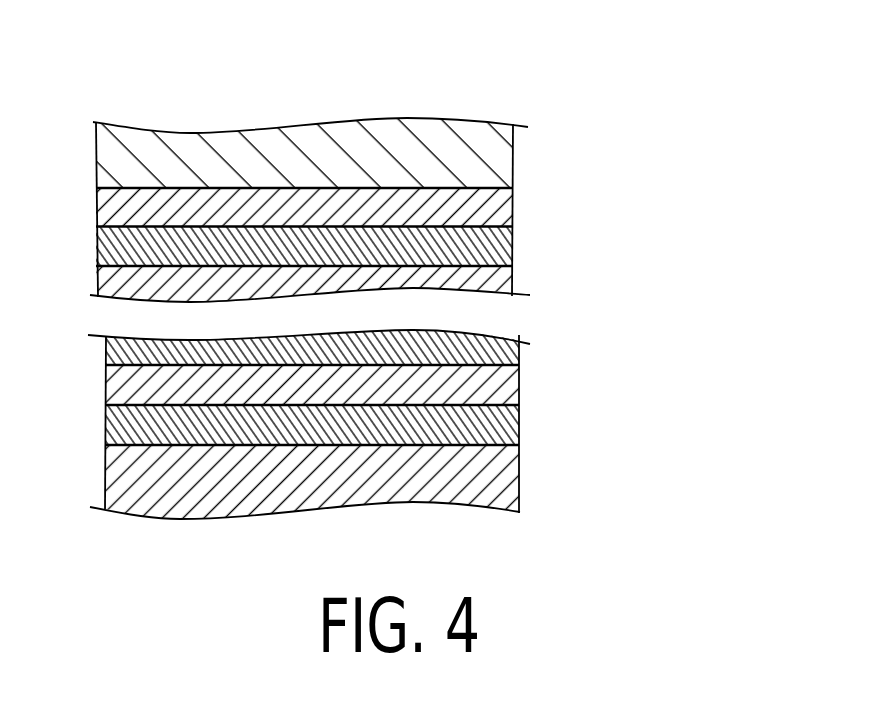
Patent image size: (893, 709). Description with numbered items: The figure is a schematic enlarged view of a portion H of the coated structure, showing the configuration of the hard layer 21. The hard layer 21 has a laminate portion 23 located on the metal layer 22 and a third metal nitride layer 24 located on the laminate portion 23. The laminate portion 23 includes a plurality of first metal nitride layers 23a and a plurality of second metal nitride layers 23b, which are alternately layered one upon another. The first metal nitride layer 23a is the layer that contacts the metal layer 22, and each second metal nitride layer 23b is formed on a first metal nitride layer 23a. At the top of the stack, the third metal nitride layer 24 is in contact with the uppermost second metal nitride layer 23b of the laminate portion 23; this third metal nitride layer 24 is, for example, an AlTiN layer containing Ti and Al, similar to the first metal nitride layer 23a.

The portion H is at (86, 78).
The hard layer 21 is at (692, 132).
The metal layer 22 is at (505, 475).
The laminate portion 23 is at (633, 187).
The first metal nitride layer 23a is at (512, 247).
The second metal nitride layer 23b is at (512, 207).
The third metal nitride layer 24 is at (513, 157).